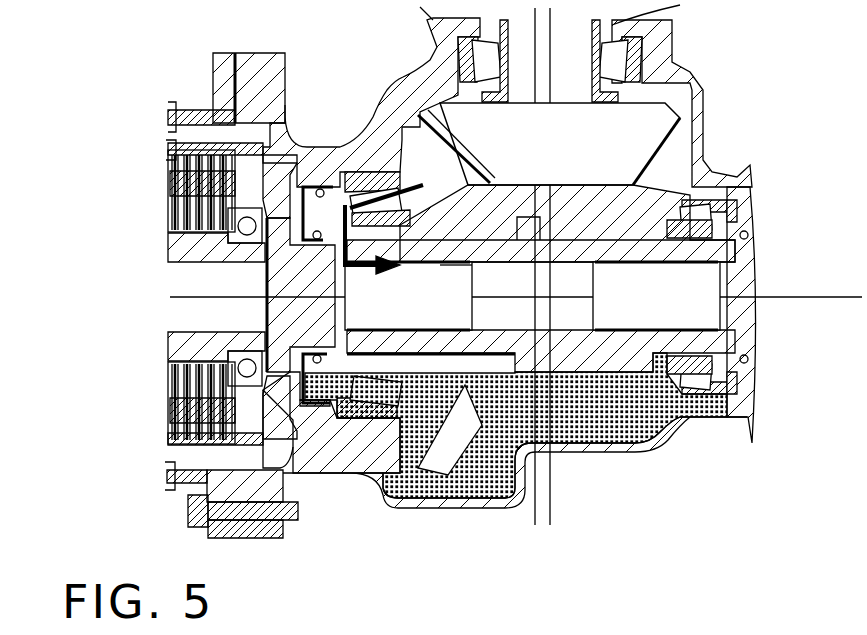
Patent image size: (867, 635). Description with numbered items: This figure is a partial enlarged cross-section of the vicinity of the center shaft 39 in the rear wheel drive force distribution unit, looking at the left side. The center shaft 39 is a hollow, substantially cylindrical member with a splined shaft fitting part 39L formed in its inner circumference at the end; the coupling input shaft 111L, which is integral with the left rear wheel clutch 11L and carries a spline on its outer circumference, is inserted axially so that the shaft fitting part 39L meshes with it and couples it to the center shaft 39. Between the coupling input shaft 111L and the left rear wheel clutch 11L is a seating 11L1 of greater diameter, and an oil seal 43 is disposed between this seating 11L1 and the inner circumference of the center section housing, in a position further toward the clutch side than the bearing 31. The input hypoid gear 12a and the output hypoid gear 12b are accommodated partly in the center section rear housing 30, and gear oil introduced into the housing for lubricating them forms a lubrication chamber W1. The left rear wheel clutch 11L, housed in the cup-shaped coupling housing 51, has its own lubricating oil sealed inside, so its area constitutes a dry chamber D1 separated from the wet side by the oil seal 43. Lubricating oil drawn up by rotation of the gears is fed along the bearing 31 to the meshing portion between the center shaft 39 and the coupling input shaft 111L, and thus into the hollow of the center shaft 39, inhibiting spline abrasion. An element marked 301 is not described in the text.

The coupling housing 51 is at (227, 65).
The oil seal 43 is at (262, 165).
The seal member 301 is at (333, 190).
The output hypoid gear 12b is at (417, 128).
The bearing 31 is at (405, 178).
The input hypoid gear 12a is at (590, 172).
The shaft fitting part 39L is at (455, 268).
The coupling input shaft 111L is at (468, 310).
The center shaft 39 is at (572, 342).
The center section rear housing 30 is at (636, 457).
The lubrication chamber W1 is at (579, 413).
The seating part 11L1 is at (318, 403).
The left rear wheel clutch 11L is at (250, 445).
The dry chamber D1 is at (207, 462).